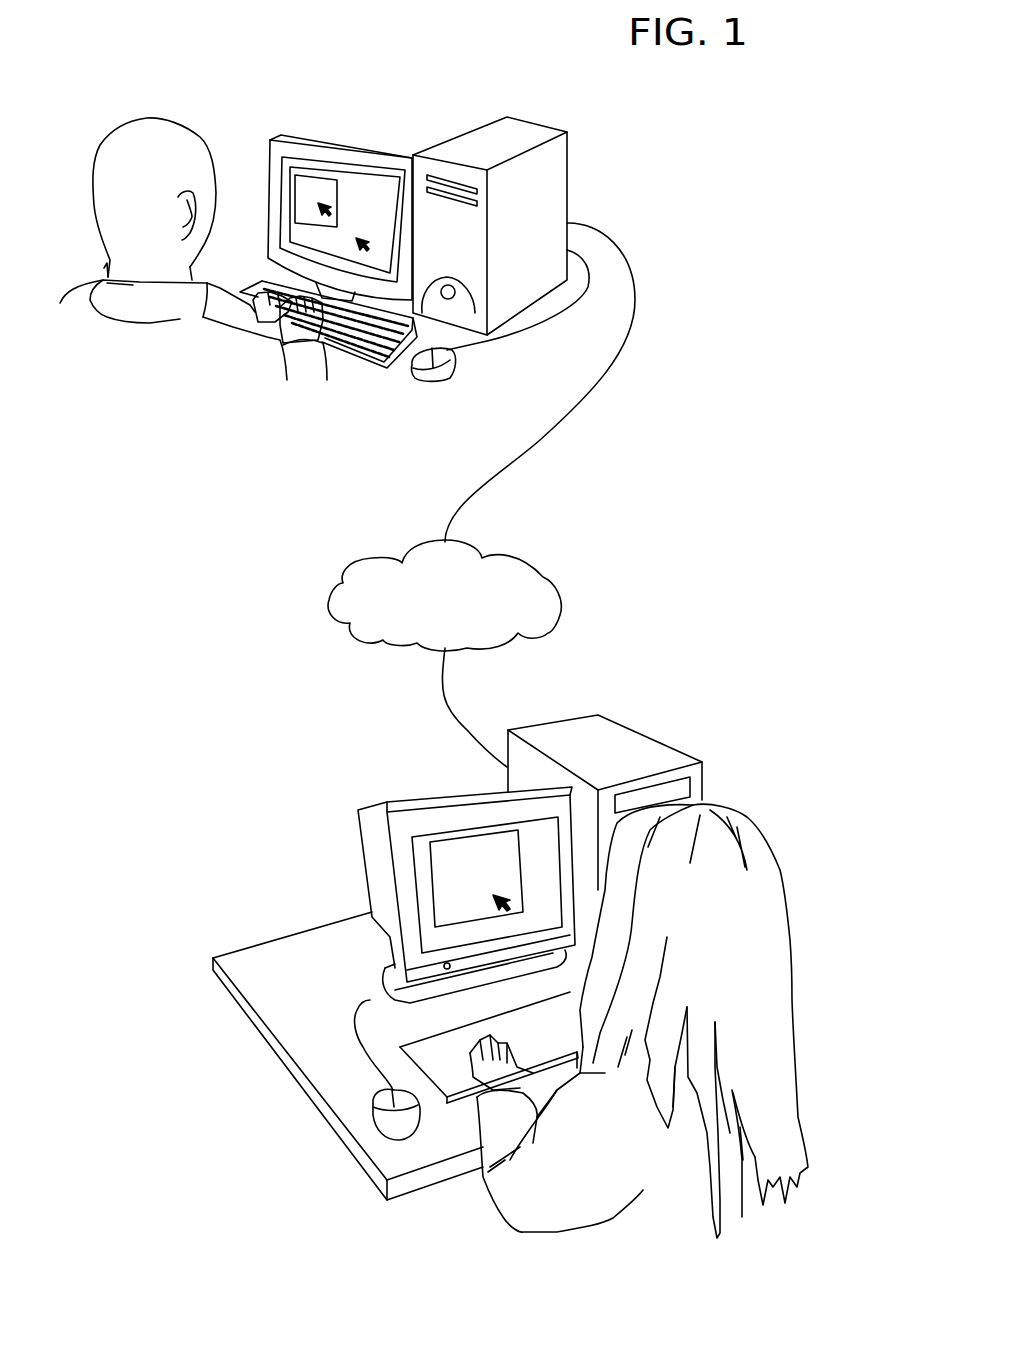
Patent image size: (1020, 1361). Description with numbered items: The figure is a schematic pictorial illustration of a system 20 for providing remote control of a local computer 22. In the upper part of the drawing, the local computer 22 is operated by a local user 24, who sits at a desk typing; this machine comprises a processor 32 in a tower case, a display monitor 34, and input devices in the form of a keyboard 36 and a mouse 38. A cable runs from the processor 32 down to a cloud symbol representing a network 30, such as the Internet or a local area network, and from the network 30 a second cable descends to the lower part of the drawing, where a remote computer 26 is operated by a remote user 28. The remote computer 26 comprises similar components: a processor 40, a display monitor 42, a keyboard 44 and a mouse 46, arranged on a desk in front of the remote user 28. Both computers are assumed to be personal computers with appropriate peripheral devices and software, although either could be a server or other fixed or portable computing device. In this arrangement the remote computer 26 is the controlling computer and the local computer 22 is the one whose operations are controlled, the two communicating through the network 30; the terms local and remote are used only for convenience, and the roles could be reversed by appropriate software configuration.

The system 20 is at (752, 282).
The local computer 22 is at (448, 132).
The local user 24 is at (122, 150).
The remote computer 26 is at (337, 783).
The remote user 28 is at (763, 877).
The network 30 is at (343, 583).
The processor 32 is at (517, 137).
The display monitor 34 is at (320, 155).
The keyboard 36 is at (362, 350).
The mouse 38 is at (420, 365).
The processor 40 is at (620, 745).
The display monitor 42 is at (377, 868).
The keyboard 44 is at (430, 1047).
The mouse 46 is at (393, 1120).